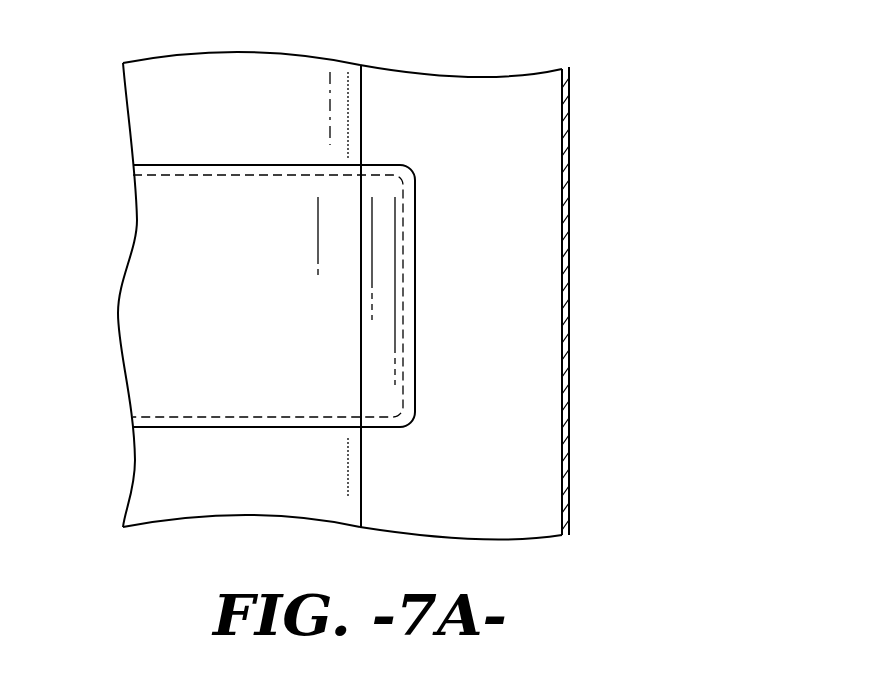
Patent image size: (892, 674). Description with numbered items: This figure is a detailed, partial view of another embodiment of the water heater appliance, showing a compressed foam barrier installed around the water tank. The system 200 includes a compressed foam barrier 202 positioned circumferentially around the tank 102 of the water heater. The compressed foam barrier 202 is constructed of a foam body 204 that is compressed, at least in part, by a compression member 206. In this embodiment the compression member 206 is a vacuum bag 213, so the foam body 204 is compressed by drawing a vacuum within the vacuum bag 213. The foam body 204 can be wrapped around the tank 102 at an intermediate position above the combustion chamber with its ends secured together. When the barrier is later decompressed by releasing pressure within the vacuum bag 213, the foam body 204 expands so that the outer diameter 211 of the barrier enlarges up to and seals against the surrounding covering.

The system 200 is at (428, 290).
The compressed foam barrier 202 is at (597, 290).
The tank 102 is at (372, 105).
The foam body 204 is at (178, 168).
The compression member 206 is at (425, 385).
The vacuum bag 213 is at (335, 315).
The outer diameter 211 is at (415, 265).